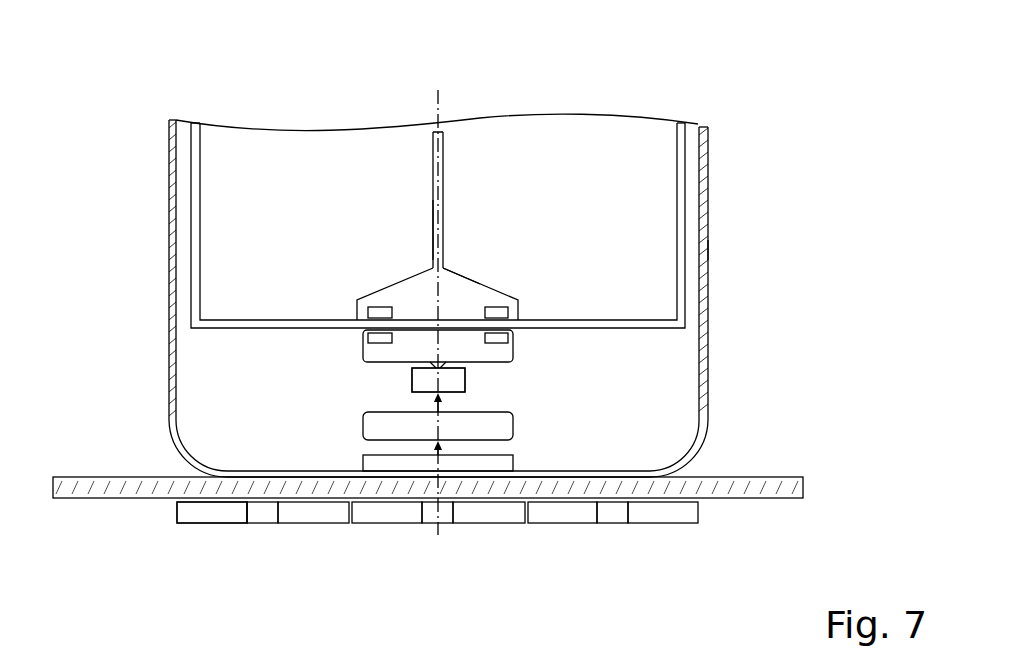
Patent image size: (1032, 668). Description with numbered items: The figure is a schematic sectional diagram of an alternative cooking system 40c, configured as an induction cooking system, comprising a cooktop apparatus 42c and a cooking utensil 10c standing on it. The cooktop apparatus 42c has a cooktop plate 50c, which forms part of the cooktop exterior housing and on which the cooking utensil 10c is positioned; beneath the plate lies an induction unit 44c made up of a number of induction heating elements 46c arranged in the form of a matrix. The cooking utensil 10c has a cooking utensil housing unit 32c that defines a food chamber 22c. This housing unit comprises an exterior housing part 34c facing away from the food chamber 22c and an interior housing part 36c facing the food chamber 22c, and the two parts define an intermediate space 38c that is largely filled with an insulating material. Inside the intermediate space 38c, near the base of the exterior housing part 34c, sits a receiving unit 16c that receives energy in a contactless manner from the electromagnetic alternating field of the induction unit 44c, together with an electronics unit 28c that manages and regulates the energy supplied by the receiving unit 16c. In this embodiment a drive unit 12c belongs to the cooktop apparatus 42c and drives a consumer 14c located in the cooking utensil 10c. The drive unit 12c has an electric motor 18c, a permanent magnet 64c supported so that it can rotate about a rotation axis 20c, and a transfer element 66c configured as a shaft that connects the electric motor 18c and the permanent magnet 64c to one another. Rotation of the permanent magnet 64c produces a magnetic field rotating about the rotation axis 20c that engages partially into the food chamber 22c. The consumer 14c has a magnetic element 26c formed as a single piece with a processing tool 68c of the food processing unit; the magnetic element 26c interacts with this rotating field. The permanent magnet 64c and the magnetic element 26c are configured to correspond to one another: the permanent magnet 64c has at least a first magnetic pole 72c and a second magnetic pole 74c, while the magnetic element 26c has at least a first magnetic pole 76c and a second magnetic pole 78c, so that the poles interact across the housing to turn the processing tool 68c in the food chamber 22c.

The cooking utensil 10c is at (753, 137).
The drive unit 12c is at (530, 373).
The consumer 14c is at (496, 256).
The receiving unit 16c is at (500, 462).
The electric motor 18c is at (465, 383).
The rotation axis 20c is at (434, 97).
The food chamber 22c is at (316, 208).
The magnetic element 26c is at (465, 300).
The electronics unit 28c is at (500, 432).
The cooking utensil housing unit 32c is at (712, 187).
The exterior housing part 34c is at (709, 248).
The interior housing part 36c is at (680, 123).
The intermediate space 38c is at (273, 465).
The cooking system 40c is at (797, 82).
The cooktop apparatus 42c is at (794, 446).
The induction unit 44c is at (167, 507).
The induction heating element 46c is at (213, 510).
The cooktop plate 50c is at (85, 490).
The permanent magnet 64c is at (402, 350).
The transfer element 66c is at (407, 370).
The processing tool 68c is at (461, 276).
The first magnetic pole 72c is at (368, 338).
The second magnetic pole 74c is at (508, 340).
The first magnetic pole 76c is at (368, 313).
The second magnetic pole 78c is at (508, 312).